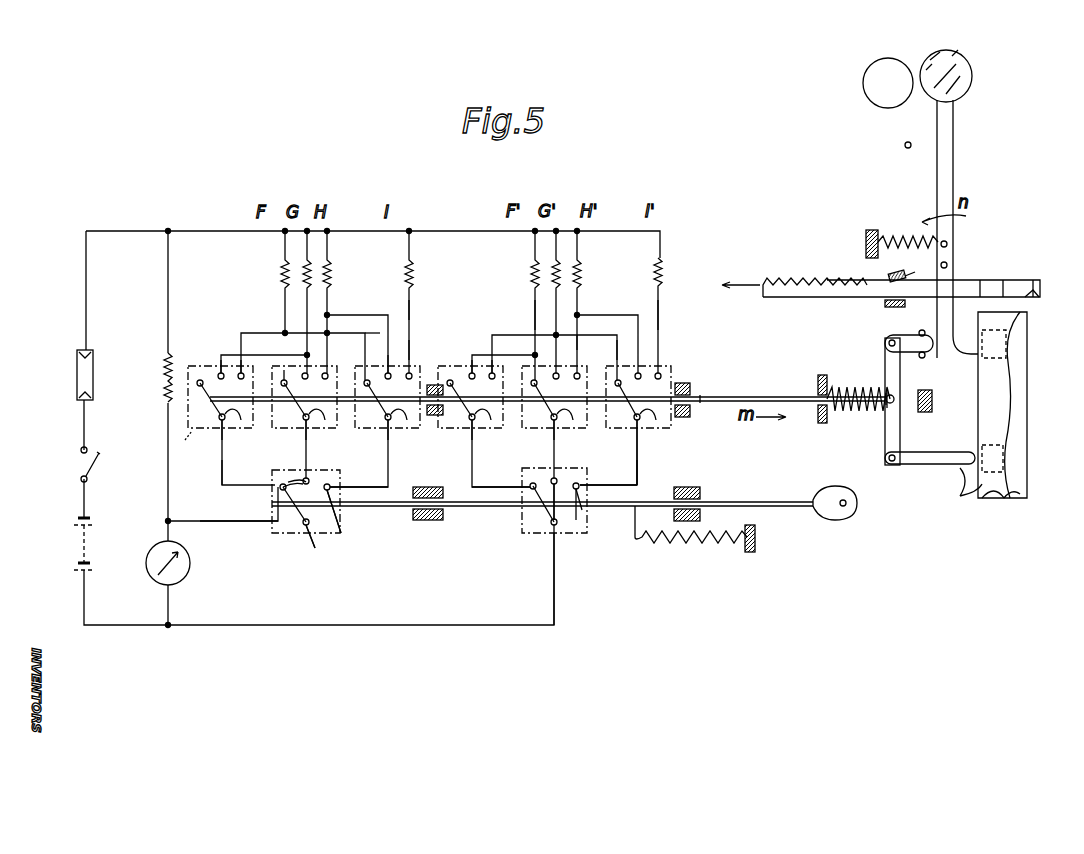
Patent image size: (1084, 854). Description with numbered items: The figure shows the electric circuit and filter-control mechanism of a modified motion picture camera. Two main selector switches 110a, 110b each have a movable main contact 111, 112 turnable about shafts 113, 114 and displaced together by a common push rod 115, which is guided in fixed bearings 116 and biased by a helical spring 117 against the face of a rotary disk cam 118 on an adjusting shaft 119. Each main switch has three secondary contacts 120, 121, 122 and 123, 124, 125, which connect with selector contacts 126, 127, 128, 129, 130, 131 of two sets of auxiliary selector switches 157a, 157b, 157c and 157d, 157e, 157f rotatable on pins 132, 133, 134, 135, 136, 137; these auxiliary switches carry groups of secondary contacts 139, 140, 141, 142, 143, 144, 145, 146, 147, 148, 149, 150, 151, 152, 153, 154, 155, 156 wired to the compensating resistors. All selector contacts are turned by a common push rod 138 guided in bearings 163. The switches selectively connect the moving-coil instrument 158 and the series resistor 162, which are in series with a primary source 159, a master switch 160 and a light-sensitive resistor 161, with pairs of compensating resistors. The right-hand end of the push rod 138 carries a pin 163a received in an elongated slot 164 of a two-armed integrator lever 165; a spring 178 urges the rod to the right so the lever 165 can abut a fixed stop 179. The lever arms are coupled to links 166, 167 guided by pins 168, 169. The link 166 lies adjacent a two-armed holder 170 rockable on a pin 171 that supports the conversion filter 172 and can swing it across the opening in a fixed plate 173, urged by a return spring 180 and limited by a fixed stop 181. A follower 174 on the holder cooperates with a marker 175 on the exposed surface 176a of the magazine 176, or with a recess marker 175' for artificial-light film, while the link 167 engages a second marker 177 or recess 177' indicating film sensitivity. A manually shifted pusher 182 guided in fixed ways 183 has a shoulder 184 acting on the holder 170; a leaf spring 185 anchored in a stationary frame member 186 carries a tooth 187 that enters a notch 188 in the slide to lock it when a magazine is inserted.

The main selector switch 110a is at (538, 544).
The main selector switch 110b is at (277, 544).
The movable main contact 111 is at (544, 498).
The movable main contact 112 is at (280, 492).
The shaft 113 is at (558, 530).
The shaft 114 is at (315, 546).
The push rod 115 is at (784, 508).
The fixed bearings 116 is at (434, 510).
The helical spring 117 is at (720, 546).
The rotary disk cam 118 is at (825, 512).
The adjusting shaft 119 is at (848, 510).
The secondary contact 120 is at (528, 494).
The secondary contact 121 is at (580, 526).
The secondary contact 122 is at (596, 538).
The secondary contact 123 is at (278, 504).
The secondary contact 124 is at (337, 508).
The secondary contact 125 is at (336, 489).
The selector contact 126 is at (490, 422).
The selector contact 127 is at (620, 450).
The selector contact 128 is at (660, 430).
The selector contact 129 is at (239, 436).
The selector contact 130 is at (322, 436).
The selector contact 131 is at (547, 413).
The shaft or pin 132 is at (450, 442).
The shaft or pin 133 is at (582, 512).
The shaft or pin 134 is at (648, 445).
The shaft or pin 135 is at (222, 480).
The shaft or pin 136 is at (286, 431).
The shaft or pin 137 is at (402, 446).
The motion transmitting push rod 138 is at (754, 403).
The secondary contact 139 is at (448, 378).
The secondary contact 140 is at (472, 370).
The secondary contact 141 is at (492, 370).
The secondary contact 142 is at (534, 330).
The secondary contact 143 is at (577, 350).
The secondary contact 144 is at (577, 370).
The secondary contact 145 is at (617, 360).
The secondary contact 146 is at (658, 350).
The secondary contact 147 is at (658, 373).
The secondary contact 148 is at (199, 372).
The secondary contact 149 is at (221, 360).
The secondary contact 150 is at (240, 360).
The secondary contact 151 is at (282, 380).
The secondary contact 152 is at (358, 330).
The secondary contact 153 is at (362, 376).
The secondary contact 154 is at (386, 370).
The secondary contact 155 is at (409, 370).
The secondary contact 156 is at (411, 368).
The auxiliary selector switch 157a is at (452, 431).
The auxiliary selector switch 157b is at (536, 431).
The auxiliary selector switch 157c is at (620, 431).
The auxiliary selector switch 157d is at (192, 444).
The auxiliary selector switch 157e is at (236, 445).
The auxiliary selector switch 157f is at (368, 431).
The moving-coil instrument 158 is at (184, 576).
The primary source of electrical energy 159 is at (74, 520).
The master switch 160 is at (78, 458).
The light-sensitive resistor 161 is at (78, 360).
The series resistor 162 is at (158, 358).
The bearings 163 is at (684, 386).
The pin 163a is at (884, 392).
The elongated slot 164 is at (895, 404).
The two-armed integrator lever 165 is at (900, 380).
The link 166 is at (888, 340).
The link 167 is at (964, 494).
The pin 168 is at (922, 330).
The pin 169 is at (924, 458).
The two-armed lever or holder 170 is at (948, 245).
The pin 171 is at (948, 266).
The conversion filter 172 is at (972, 100).
The fixed plate 173 is at (862, 88).
The follower 174 is at (1012, 372).
The adjusting element or marker 175 is at (1022, 341).
The adjusting element or marker 175' is at (1037, 356).
The magazine 176 is at (1004, 460).
The exposed surface 176a is at (976, 443).
The second adjusting element or marker 177 is at (1004, 509).
The recess 177' is at (1037, 488).
The spring 178 is at (854, 414).
The fixed stop 179 is at (934, 404).
The return spring 180 is at (882, 238).
The fixed stop 181 is at (905, 146).
The pusher 182 is at (826, 278).
The fixed ways 183 is at (883, 308).
The motion transmitting projection or shoulder 184 is at (984, 280).
The leaf spring 185 is at (1003, 288).
The stationary frame member 186 is at (912, 268).
The tooth 187 is at (1033, 290).
The notch 188 is at (1038, 294).